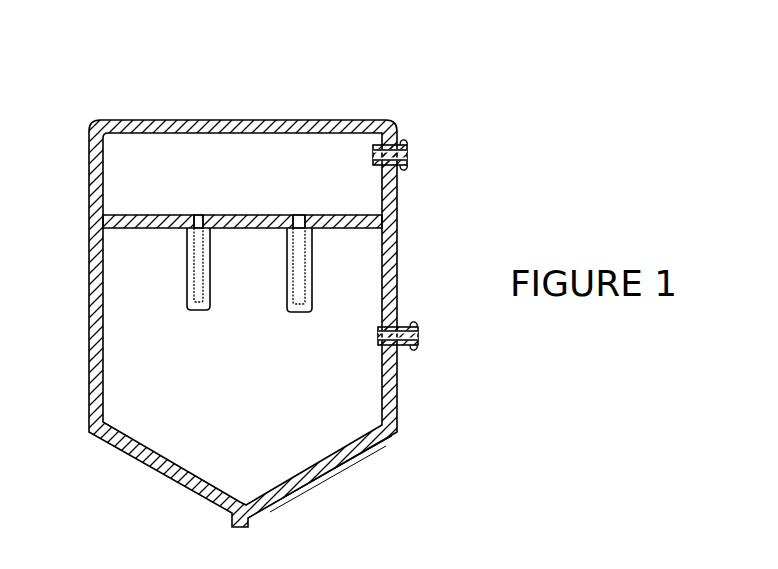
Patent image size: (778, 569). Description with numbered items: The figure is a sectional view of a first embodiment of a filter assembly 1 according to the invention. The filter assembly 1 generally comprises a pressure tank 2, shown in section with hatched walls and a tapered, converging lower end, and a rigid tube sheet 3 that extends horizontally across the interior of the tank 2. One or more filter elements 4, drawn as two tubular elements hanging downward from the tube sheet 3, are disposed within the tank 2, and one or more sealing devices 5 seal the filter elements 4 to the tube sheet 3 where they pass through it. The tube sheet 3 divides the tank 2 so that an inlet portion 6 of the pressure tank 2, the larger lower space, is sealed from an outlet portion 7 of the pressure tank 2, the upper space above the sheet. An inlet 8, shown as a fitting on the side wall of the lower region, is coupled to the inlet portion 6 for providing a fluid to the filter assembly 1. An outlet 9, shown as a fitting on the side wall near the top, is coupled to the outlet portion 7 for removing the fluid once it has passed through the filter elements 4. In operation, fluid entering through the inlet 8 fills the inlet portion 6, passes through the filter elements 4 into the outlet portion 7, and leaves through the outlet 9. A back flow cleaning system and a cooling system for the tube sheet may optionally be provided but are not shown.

The filter assembly 1 is at (378, 91).
The pressure tank 2 is at (89, 240).
The tube sheet 3 is at (148, 215).
The filter elements 4 is at (185, 282).
The sealing devices 5 is at (200, 215).
The inlet portion 6 is at (180, 455).
The outlet portion 7 is at (257, 157).
The inlet 8 is at (420, 345).
The outlet 9 is at (407, 165).